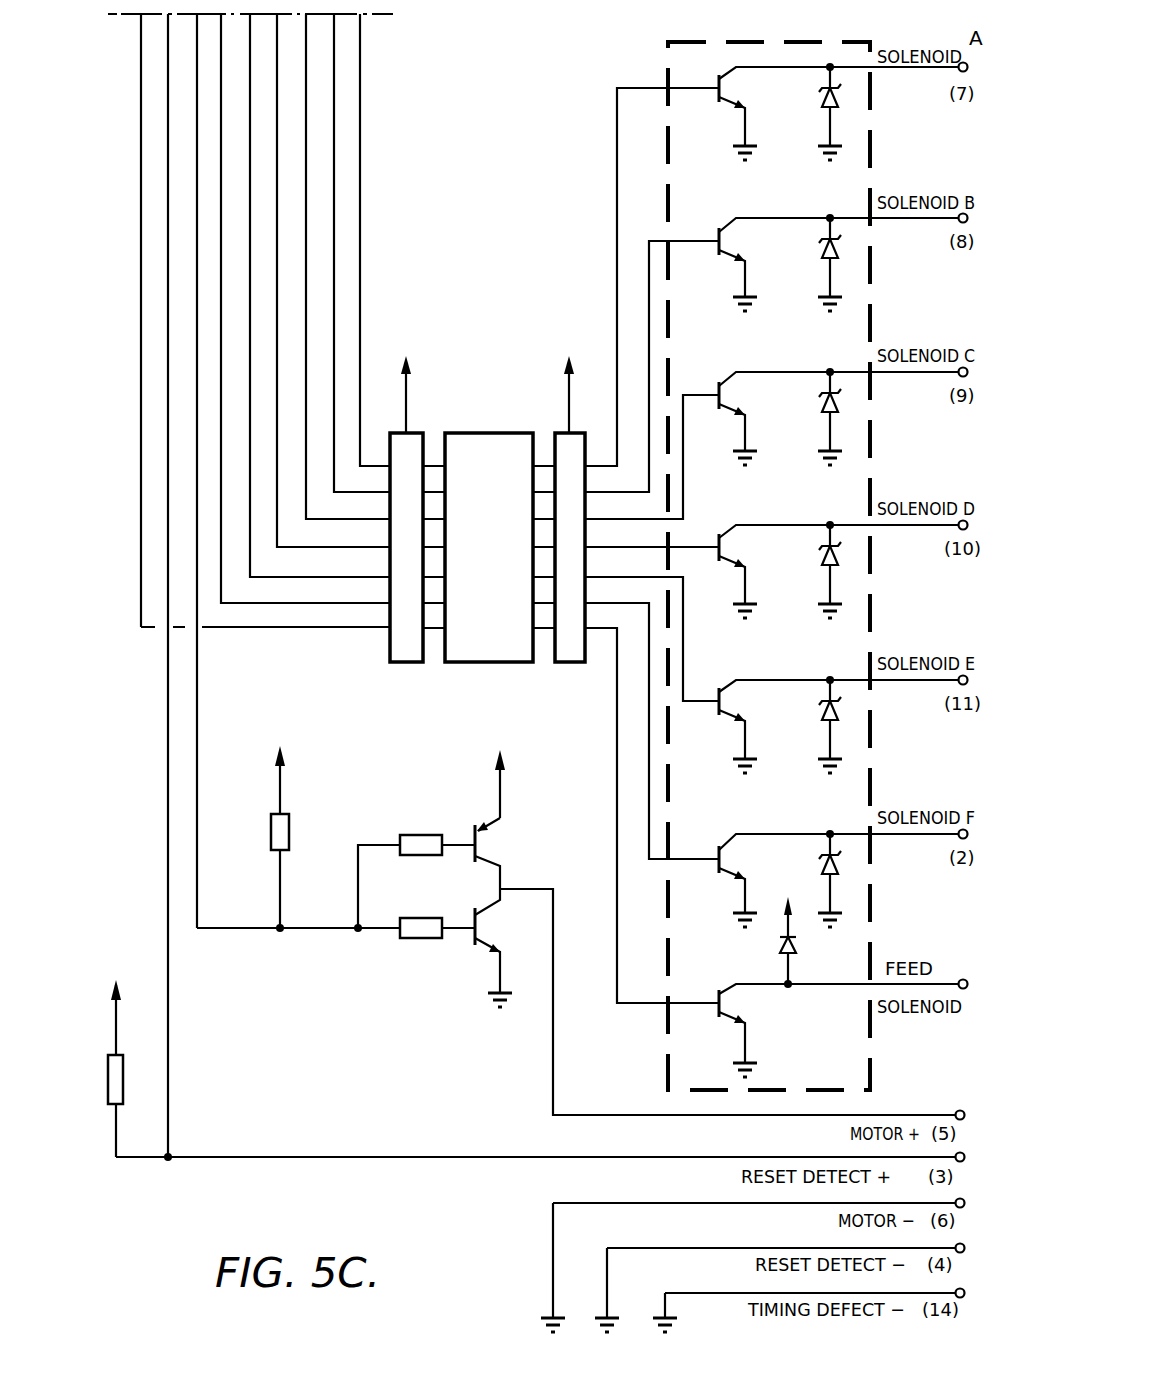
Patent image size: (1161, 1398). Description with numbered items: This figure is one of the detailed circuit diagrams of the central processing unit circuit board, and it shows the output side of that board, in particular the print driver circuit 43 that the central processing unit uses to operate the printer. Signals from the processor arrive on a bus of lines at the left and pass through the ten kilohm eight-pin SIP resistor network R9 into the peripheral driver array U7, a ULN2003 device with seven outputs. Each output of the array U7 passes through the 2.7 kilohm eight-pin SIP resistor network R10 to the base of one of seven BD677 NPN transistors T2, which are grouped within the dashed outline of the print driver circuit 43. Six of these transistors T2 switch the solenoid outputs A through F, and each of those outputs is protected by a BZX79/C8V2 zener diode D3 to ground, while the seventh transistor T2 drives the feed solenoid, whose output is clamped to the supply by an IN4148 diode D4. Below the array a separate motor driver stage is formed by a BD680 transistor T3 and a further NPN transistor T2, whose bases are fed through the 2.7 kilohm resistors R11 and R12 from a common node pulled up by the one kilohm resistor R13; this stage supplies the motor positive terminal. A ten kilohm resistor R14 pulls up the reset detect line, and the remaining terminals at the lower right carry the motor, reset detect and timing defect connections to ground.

The print driver circuit 43 is at (660, 1038).
The peripheral driver array U7 is at (500, 547).
The 8 pin SIP resistor R9 is at (417, 530).
The 8 pin SIP resistor R10 is at (576, 530).
The resistor R11 is at (423, 829).
The resistor R12 is at (425, 914).
The resistor R13 is at (307, 837).
The resistor R14 is at (101, 1068).
The NPN transistor T2 is at (716, 572).
The transistor T3 is at (505, 819).
The zener diode D3 is at (841, 495).
The diode D4 is at (797, 942).